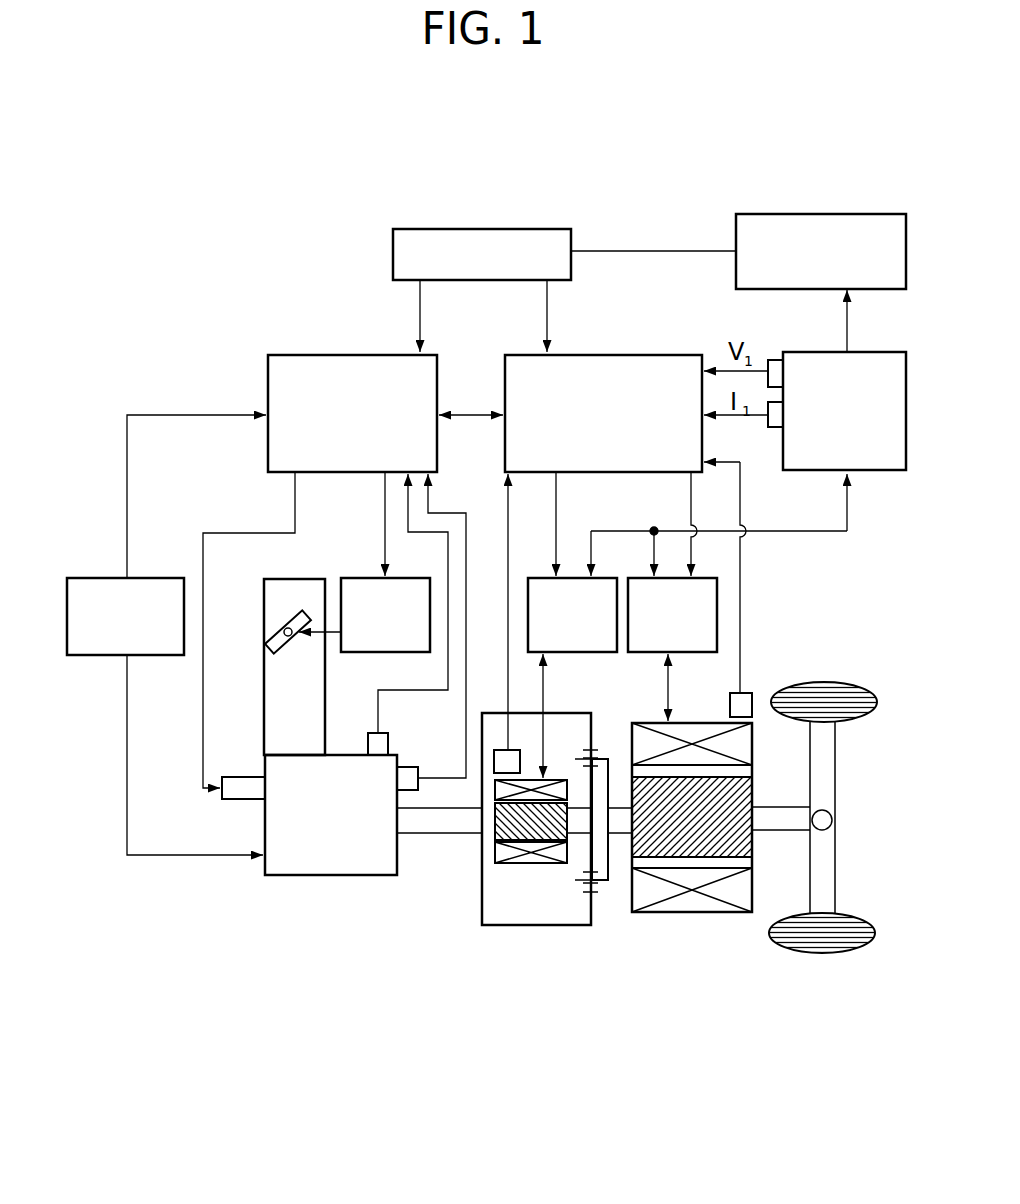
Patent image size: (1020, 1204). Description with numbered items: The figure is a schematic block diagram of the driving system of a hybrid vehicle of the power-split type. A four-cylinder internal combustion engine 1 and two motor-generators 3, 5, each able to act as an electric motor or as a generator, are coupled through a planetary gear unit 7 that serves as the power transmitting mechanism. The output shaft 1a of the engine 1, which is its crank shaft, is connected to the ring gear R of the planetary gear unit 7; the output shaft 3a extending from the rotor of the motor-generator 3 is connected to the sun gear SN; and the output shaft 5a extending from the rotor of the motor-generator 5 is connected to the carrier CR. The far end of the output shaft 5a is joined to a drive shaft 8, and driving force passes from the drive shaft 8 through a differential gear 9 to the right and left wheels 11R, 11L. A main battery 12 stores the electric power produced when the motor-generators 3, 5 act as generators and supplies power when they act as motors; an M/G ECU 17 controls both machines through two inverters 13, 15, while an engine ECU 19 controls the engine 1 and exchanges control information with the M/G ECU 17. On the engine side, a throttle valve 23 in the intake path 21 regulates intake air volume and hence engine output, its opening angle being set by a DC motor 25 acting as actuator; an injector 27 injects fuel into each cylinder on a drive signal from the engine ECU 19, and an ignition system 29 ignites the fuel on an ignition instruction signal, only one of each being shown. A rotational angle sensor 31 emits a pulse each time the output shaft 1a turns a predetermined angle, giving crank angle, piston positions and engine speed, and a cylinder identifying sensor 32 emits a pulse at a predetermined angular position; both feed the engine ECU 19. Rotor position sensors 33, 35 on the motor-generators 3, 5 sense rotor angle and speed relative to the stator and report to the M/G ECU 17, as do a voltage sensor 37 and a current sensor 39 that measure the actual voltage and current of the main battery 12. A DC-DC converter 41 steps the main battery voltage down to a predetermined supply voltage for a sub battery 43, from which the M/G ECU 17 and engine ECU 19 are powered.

The internal combustion engine 1 is at (347, 755).
The output shaft 1a is at (438, 835).
The motor-generator 3 is at (522, 865).
The output shaft 3a is at (577, 793).
The motor-generator 5 is at (698, 912).
The output shaft 5a is at (628, 790).
The planetary gear unit 7 is at (558, 972).
The sun gear SN is at (585, 850).
The ring gear R is at (593, 903).
The carrier CR is at (607, 882).
The drive shaft 8 is at (773, 807).
The differential gear 9 is at (833, 820).
The wheel 11R is at (872, 696).
The wheel 11L is at (870, 922).
The main battery 12 is at (888, 352).
The inverter 13 is at (602, 578).
The inverter 15 is at (702, 578).
The M/G ECU 17 is at (658, 355).
The engine ECU 19 is at (308, 355).
The intake path 21 is at (298, 579).
The throttle valve 23 is at (284, 624).
The DC motor 25 is at (397, 578).
The injector 27 is at (232, 777).
The ignition system 29 is at (85, 578).
The rotational angle sensor 31 is at (414, 767).
The cylinder identifying sensor 32 is at (387, 733).
The rotor position sensor 33 is at (500, 750).
The rotor position sensor 35 is at (750, 693).
The voltage sensor 37 is at (773, 360).
The current sensor 39 is at (770, 428).
The DC-DC converter 41 is at (868, 214).
The sub battery 43 is at (537, 229).